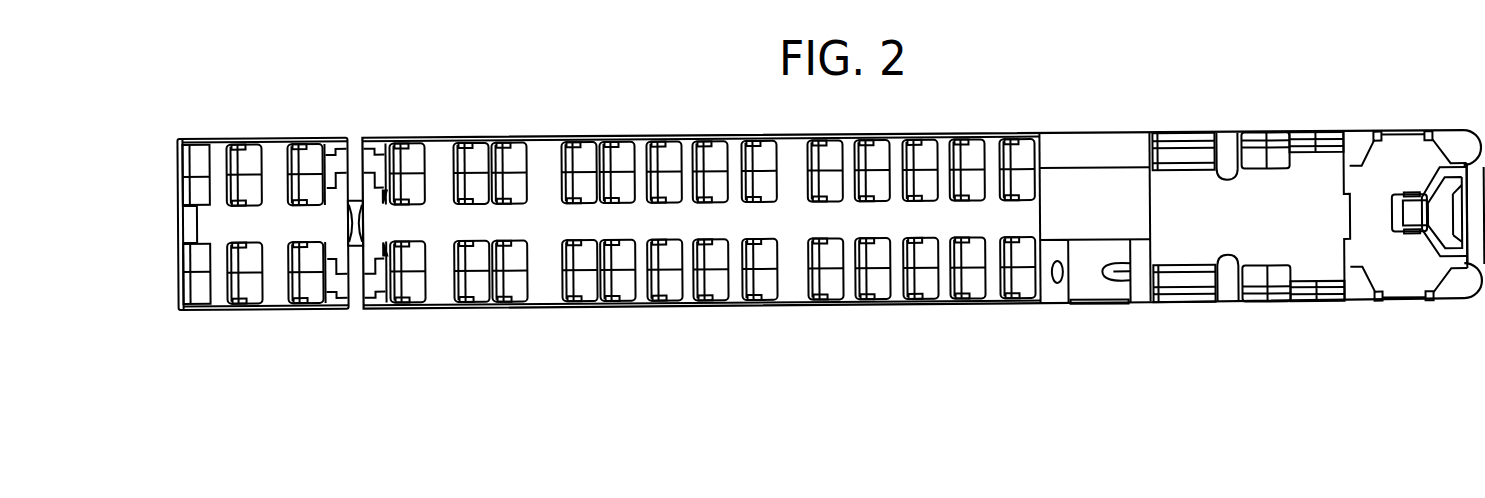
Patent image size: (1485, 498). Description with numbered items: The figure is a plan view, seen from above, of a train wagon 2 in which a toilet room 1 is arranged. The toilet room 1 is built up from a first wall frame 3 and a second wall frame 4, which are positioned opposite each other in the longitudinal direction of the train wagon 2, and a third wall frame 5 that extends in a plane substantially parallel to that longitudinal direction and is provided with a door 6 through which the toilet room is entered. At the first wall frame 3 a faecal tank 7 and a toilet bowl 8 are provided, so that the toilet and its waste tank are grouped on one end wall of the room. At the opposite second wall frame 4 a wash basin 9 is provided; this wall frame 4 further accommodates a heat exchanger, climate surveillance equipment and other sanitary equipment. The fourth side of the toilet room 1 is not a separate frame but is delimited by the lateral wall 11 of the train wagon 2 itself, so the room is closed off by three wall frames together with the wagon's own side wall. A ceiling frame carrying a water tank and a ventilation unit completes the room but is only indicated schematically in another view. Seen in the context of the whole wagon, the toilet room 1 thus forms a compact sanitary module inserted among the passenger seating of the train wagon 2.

The toilet room 1 is at (1080, 252).
The train wagon 2 is at (865, 320).
The first wall frame 3 is at (1155, 256).
The second wall frame 4 is at (1044, 258).
The third wall frame 5 is at (1117, 232).
The door 6 is at (1098, 237).
The faecal tank 7 is at (1145, 287).
The toilet bowl 8 is at (1117, 285).
The wash basin 9 is at (1064, 243).
The lateral wall 11 is at (1087, 306).